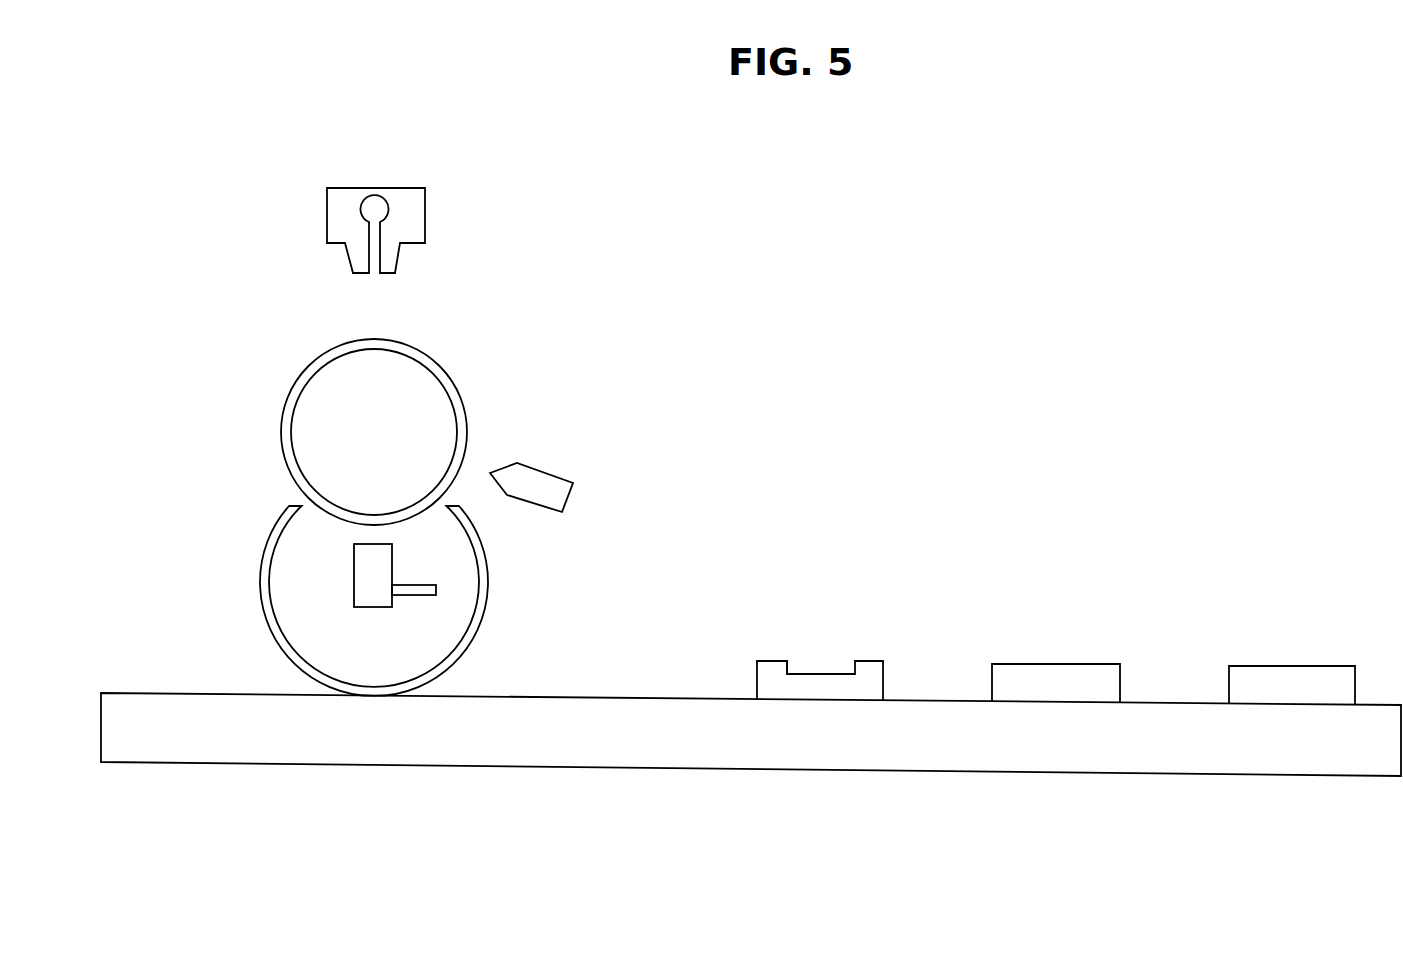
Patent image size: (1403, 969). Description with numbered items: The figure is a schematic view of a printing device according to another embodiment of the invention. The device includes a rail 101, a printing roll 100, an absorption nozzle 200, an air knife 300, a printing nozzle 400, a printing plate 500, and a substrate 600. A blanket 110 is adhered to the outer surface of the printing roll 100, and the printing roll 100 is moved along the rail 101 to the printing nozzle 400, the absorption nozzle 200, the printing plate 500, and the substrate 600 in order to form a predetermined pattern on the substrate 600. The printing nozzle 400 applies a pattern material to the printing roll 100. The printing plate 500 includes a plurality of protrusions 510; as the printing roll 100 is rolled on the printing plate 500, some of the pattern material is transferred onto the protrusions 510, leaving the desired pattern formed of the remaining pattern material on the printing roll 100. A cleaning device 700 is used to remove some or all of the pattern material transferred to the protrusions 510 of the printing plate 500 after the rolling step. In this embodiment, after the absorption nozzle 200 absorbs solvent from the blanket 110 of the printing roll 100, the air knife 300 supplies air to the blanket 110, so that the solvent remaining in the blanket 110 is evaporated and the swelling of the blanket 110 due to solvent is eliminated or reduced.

The printing roll 100 is at (442, 438).
The blanket 110 is at (437, 372).
The rail 101 is at (868, 755).
The absorption nozzle 200 is at (468, 555).
The air knife 300 is at (560, 495).
The printing nozzle 400 is at (412, 218).
The printing plate 500 is at (822, 685).
The protrusions 510 is at (773, 670).
The substrate 600 is at (1060, 686).
The cleaning device 700 is at (1296, 688).